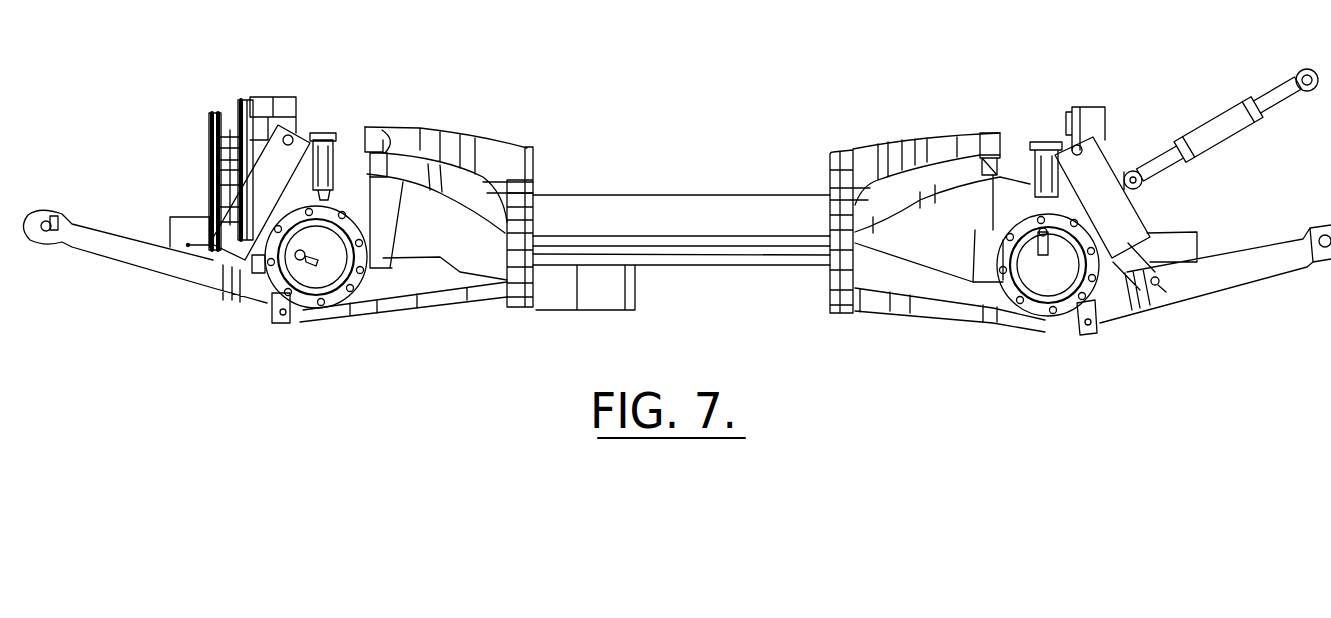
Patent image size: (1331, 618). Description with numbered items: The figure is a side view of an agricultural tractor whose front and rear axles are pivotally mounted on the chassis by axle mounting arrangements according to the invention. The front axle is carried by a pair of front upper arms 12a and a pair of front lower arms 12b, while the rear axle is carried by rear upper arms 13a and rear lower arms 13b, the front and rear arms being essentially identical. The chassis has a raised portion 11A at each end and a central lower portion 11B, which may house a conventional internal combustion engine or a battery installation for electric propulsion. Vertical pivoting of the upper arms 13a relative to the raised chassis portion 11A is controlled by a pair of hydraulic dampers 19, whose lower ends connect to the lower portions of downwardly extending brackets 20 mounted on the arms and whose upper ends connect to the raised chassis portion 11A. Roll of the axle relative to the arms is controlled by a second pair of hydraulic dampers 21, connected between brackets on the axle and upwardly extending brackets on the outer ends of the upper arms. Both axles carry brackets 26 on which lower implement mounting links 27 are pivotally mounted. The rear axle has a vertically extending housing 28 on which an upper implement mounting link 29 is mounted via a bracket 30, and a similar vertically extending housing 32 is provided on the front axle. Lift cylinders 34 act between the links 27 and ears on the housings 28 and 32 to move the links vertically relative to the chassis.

The raised chassis portion 11A is at (462, 167).
The central lower chassis portion 11B is at (675, 210).
The front upper arms 12a is at (430, 193).
The front lower arms 12b is at (403, 303).
The rear upper arms 13a is at (907, 215).
The rear lower arms 13b is at (907, 297).
The hydraulic dampers 19 is at (380, 167).
The downwardly extending brackets 20 is at (392, 207).
The second pair of hydraulic dampers 21 is at (323, 167).
The brackets 26 is at (285, 318).
The lower implement mounting links 27 is at (130, 247).
The vertically extending housing 28 is at (1097, 118).
The upper implement mounting link 29 is at (1220, 130).
The bracket 30 is at (1128, 172).
The vertically extending housing 32 is at (266, 118).
The lift cylinders 34 is at (278, 180).